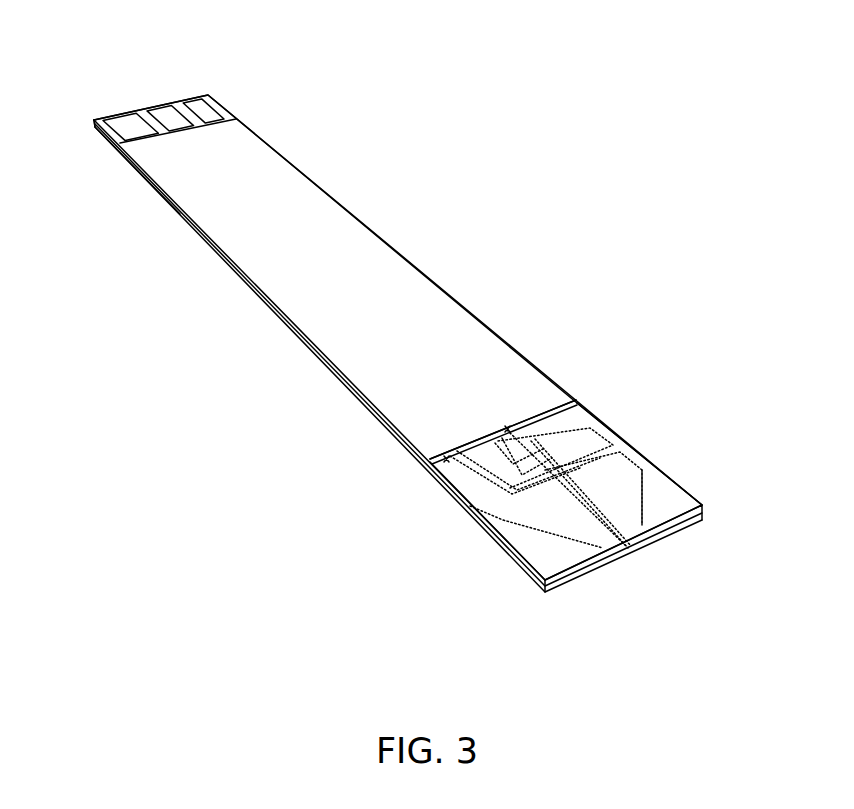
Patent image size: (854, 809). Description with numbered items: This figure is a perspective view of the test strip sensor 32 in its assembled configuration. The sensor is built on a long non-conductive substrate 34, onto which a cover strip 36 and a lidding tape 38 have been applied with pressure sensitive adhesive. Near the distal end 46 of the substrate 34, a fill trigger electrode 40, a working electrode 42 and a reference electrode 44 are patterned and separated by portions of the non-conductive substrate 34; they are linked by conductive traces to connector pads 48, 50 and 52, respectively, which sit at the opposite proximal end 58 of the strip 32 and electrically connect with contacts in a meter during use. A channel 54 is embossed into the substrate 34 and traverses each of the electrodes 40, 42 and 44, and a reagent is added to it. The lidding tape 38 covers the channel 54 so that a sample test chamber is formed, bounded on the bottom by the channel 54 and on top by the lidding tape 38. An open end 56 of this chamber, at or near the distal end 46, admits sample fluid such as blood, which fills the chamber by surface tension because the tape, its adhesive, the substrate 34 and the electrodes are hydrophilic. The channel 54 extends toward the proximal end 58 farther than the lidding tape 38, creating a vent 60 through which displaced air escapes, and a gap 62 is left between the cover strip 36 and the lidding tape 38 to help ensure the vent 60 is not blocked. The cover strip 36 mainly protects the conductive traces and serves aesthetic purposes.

The test strip sensor 32 is at (428, 140).
The substrate 34 is at (557, 584).
The cover strip 36 is at (412, 287).
The lidding tape 38 is at (663, 498).
The fill trigger electrode 40 is at (516, 443).
The working electrode 42 is at (592, 437).
The reference electrode 44 is at (530, 512).
The distal end 46 is at (678, 443).
The connector pad 48 is at (212, 110).
The connector pad 50 is at (170, 126).
The connector pad 52 is at (125, 127).
The channel 54 is at (600, 515).
The open end 56 is at (635, 560).
The proximal end 58 is at (113, 180).
The vent 60 is at (508, 430).
The gap 62 is at (447, 458).